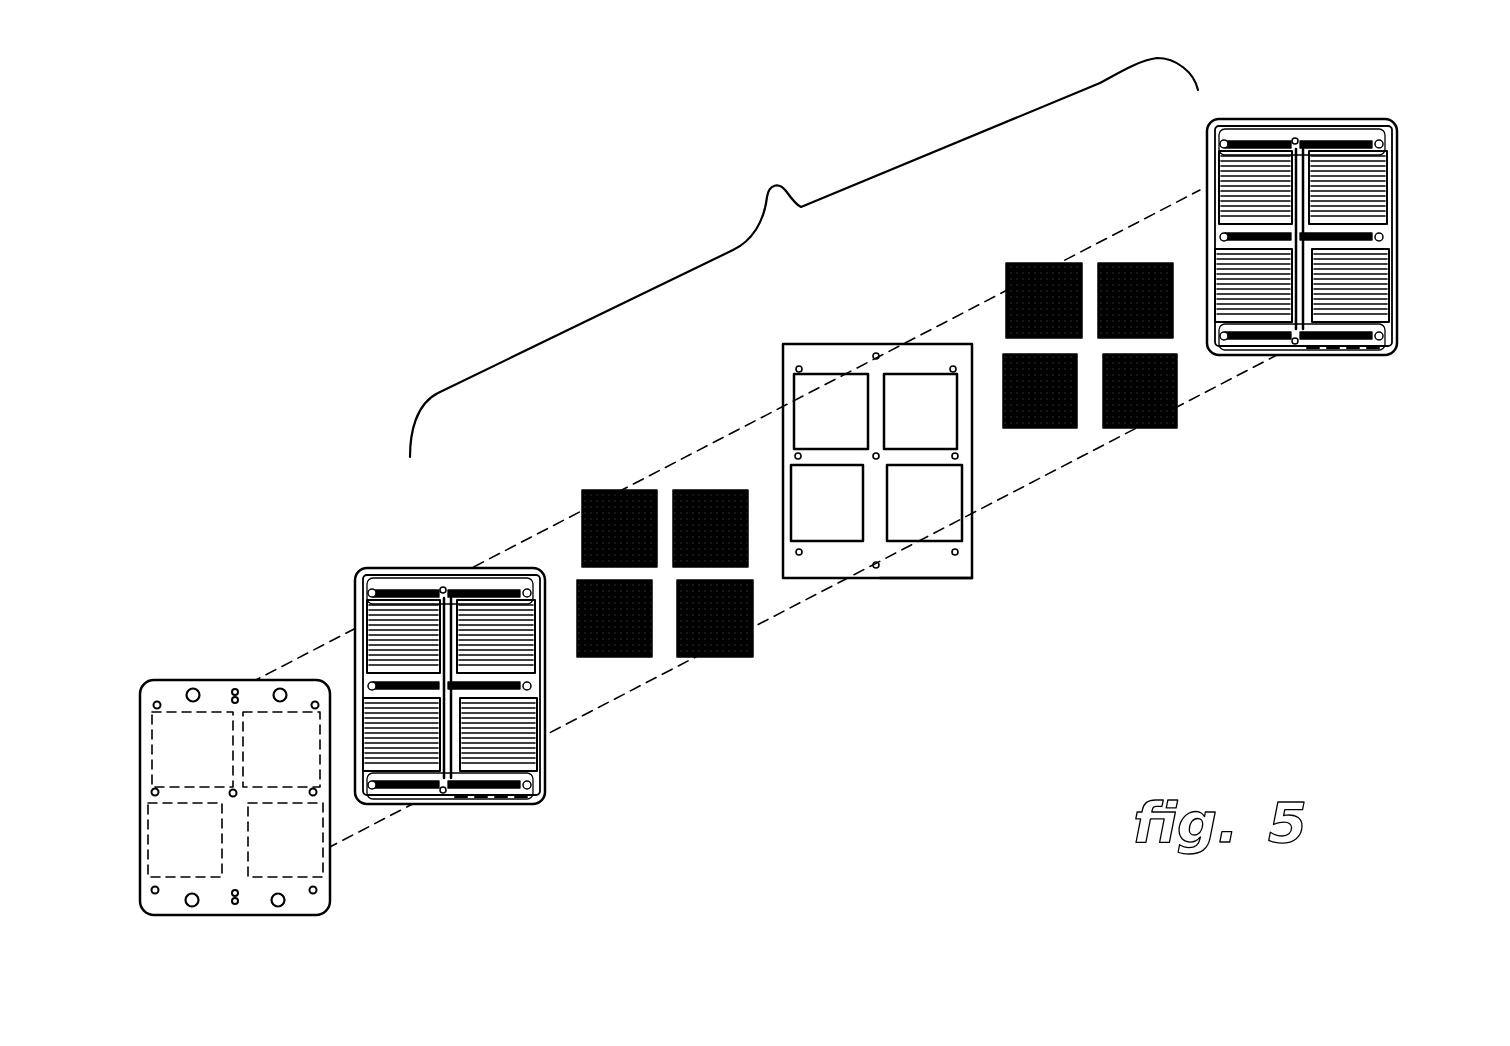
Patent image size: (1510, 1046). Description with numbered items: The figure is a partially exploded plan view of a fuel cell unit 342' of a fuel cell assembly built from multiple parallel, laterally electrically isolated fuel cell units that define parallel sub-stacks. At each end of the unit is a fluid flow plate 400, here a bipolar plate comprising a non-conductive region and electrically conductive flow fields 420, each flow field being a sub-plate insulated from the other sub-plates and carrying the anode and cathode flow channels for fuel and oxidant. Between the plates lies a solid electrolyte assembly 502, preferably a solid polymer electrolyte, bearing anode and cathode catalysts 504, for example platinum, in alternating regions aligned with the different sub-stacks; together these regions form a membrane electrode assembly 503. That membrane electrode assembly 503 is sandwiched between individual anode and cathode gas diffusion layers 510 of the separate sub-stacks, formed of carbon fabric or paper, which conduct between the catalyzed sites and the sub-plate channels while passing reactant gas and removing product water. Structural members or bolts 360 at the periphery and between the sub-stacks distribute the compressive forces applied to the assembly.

The fuel cell unit 342' is at (804, 257).
The structural members or bolts 360 is at (315, 705).
The fluid flow plate 400 is at (394, 564).
The flow fields 420 is at (378, 718).
The solid electrolyte assembly 502 is at (957, 570).
The membrane electrode assembly 503 is at (776, 370).
The anode and cathode catalysts 504 is at (857, 430).
The gas diffusion layers 510 is at (708, 510).